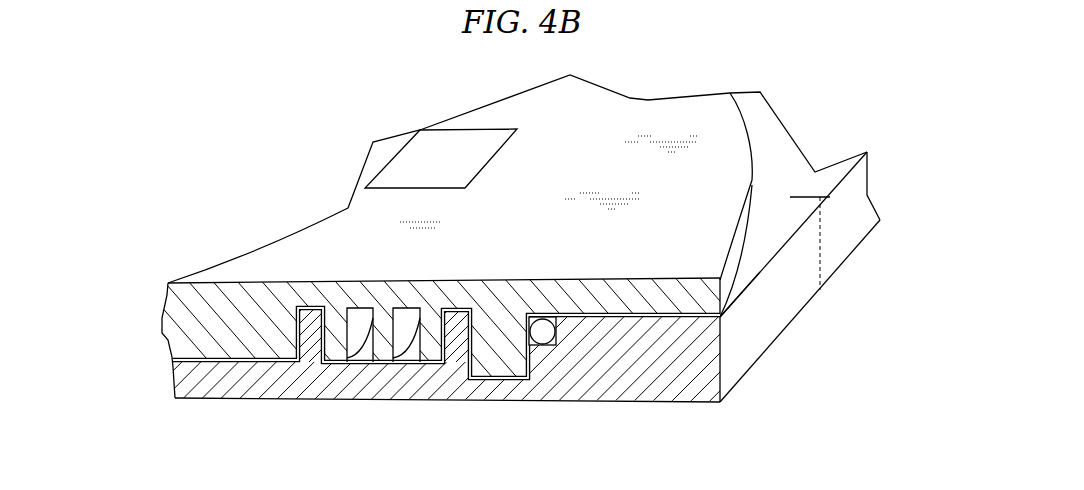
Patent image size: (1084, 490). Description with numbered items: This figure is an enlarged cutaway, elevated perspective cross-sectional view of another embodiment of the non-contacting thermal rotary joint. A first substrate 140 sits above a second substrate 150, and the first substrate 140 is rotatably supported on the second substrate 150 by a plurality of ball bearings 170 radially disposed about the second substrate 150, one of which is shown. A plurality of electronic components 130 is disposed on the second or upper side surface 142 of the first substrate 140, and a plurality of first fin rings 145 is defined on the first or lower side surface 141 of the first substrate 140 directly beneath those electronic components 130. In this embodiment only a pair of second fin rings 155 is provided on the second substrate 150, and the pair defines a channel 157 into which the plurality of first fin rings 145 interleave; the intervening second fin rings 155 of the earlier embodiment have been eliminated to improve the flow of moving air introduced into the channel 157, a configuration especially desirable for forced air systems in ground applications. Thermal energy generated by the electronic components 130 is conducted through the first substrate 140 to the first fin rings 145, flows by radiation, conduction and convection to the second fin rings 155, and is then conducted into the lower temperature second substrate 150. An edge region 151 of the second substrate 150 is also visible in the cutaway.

The electronic components 130 is at (473, 147).
The first substrate 140 is at (725, 127).
The first or lower side surface 141 is at (190, 372).
The second or upper side surface 142 is at (733, 202).
The first fin rings 145 is at (325, 366).
The second substrate 150 is at (760, 323).
The edge 151 is at (730, 320).
The second fin rings 155 is at (317, 312).
The channel 157 is at (405, 360).
The ball bearing 170 is at (552, 340).